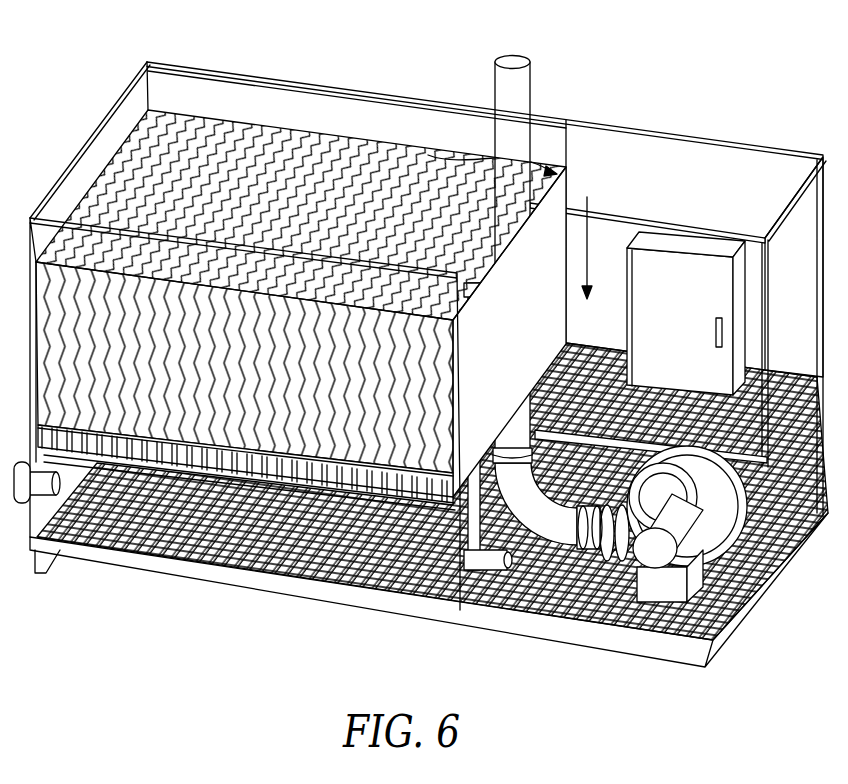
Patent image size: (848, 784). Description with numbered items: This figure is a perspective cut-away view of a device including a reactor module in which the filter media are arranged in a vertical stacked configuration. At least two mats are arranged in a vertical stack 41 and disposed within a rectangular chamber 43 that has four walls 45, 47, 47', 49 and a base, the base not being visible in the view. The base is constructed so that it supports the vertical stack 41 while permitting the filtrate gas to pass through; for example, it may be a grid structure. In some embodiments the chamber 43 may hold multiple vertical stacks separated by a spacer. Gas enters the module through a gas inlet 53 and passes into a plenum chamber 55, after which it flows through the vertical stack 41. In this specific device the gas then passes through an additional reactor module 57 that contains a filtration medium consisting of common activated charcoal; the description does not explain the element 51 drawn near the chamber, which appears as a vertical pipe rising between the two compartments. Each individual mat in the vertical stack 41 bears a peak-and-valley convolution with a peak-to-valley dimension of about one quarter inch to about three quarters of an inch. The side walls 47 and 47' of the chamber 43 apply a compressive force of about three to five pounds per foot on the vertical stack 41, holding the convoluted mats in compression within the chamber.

The vertical stack 41 is at (231, 117).
The rectangular chamber 43 is at (118, 100).
The wall 45 is at (63, 217).
The side wall 47 is at (85, 299).
The side wall 47' is at (627, 265).
The wall 49 is at (355, 88).
The discharge pipe 51 is at (423, 150).
The gas inlet 53 is at (40, 505).
The plenum chamber 55 is at (227, 562).
The additional reactor module 57 is at (598, 262).